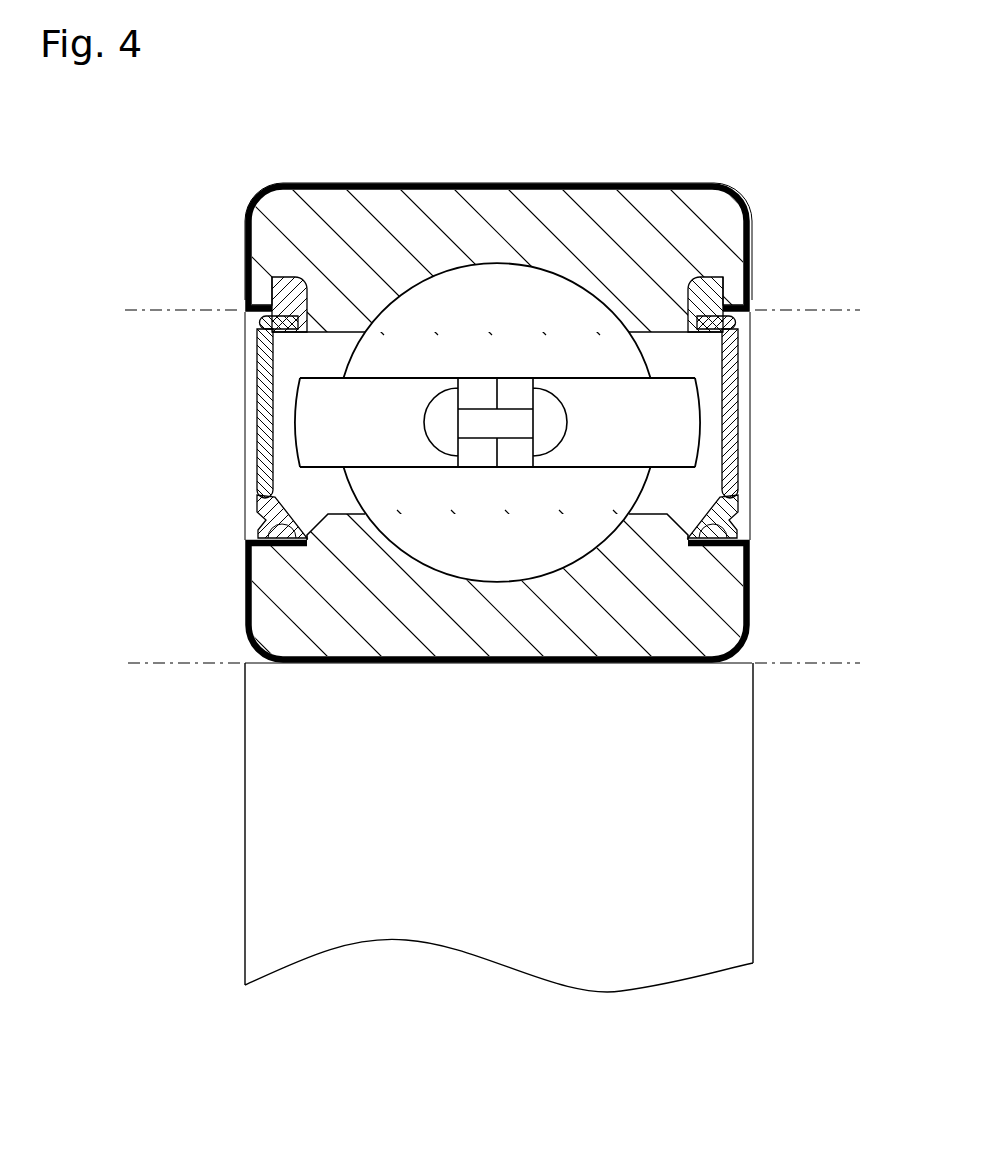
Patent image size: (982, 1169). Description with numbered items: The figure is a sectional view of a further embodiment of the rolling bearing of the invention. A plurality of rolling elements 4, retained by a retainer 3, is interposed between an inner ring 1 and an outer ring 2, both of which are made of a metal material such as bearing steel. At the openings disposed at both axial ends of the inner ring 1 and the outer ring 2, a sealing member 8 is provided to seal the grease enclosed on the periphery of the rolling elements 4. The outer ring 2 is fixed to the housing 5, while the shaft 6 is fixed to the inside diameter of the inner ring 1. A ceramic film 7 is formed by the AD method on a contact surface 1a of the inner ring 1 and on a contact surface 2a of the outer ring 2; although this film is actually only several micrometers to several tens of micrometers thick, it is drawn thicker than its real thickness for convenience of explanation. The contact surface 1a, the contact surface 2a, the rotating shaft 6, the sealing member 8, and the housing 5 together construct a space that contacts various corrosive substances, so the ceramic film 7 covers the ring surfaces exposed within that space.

The inner ring 1 is at (712, 611).
The contact surface of the inner ring 1a is at (455, 642).
The outer ring 2 is at (703, 250).
The contact surface of the outer ring 2a is at (502, 182).
The retainer 3 is at (678, 458).
The rolling elements 4 is at (612, 370).
The housing 5 is at (203, 310).
The shaft 6 is at (207, 663).
The ceramic film 7 is at (642, 182).
The sealing member 8 is at (728, 518).